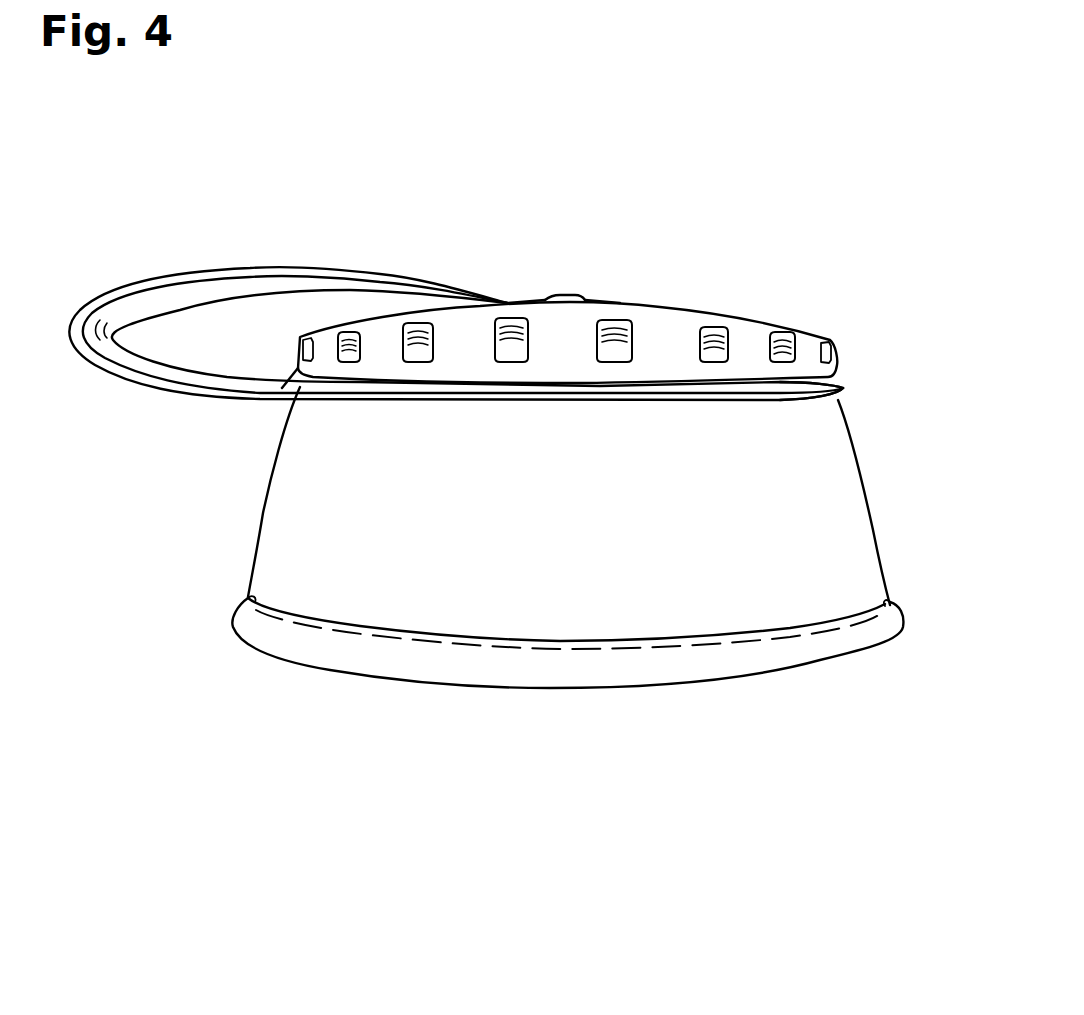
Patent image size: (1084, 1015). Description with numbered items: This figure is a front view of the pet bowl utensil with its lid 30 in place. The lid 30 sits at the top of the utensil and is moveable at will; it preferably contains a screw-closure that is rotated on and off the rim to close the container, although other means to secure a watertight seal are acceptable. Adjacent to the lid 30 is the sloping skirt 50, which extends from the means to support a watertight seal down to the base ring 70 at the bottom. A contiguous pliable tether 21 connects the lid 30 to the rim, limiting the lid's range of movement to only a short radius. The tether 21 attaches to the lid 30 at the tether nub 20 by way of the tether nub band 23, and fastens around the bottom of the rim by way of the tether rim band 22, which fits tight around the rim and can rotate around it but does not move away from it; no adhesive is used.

The tether nub 20 is at (575, 296).
The tether 21 is at (222, 283).
The tether rim band 22 is at (845, 390).
The tether nub band 23 is at (615, 303).
The lid 30 is at (740, 360).
The sloping skirt 50 is at (340, 508).
The base ring 70 is at (410, 678).